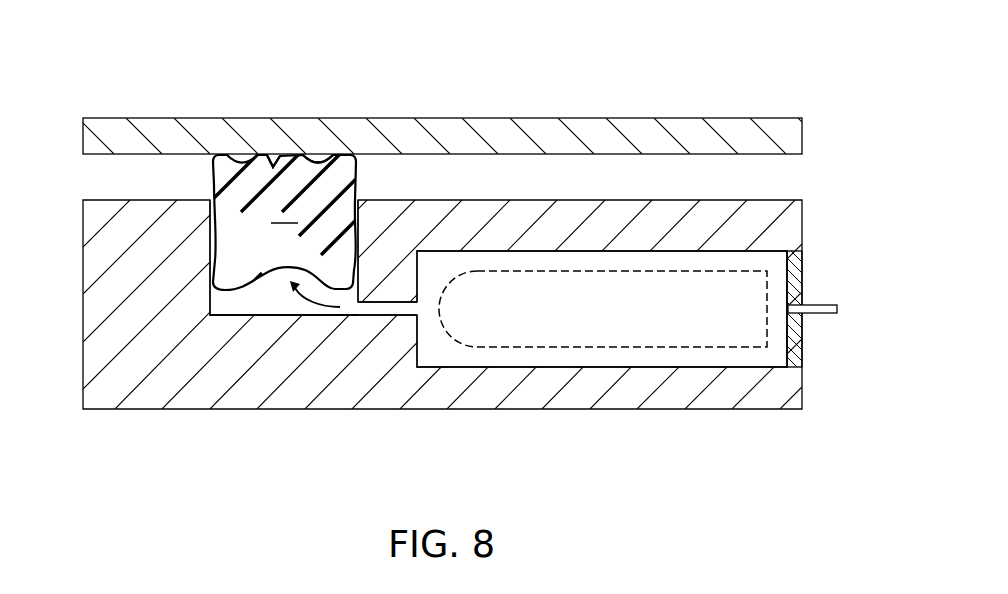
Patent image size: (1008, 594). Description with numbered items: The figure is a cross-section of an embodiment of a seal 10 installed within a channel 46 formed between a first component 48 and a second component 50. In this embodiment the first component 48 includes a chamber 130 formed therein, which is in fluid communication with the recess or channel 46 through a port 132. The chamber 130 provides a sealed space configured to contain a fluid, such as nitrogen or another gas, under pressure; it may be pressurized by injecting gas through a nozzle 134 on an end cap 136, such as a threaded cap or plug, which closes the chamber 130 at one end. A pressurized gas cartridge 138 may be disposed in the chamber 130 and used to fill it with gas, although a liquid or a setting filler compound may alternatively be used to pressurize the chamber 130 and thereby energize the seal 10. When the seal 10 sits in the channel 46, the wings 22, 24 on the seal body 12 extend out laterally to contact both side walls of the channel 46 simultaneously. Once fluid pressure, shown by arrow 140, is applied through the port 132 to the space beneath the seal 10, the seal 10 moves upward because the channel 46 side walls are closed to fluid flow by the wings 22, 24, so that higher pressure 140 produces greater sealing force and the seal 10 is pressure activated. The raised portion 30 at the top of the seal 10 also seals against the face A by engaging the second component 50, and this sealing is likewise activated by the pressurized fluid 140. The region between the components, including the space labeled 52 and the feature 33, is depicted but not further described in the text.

The seal 10 is at (651, 72).
The seal body 12 is at (300, 237).
The wing 22 is at (215, 272).
The wing 24 is at (362, 280).
The raised portion 30 is at (282, 158).
The sealing lip 33 is at (334, 154).
The channel 46 is at (228, 305).
The first component 48 is at (98, 356).
The second component 50 is at (137, 130).
The gap 52 is at (98, 178).
The chamber 130 is at (566, 367).
The port 132 is at (372, 310).
The nozzle 134 is at (820, 303).
The end cap 136 is at (795, 343).
The pressurized gas cartridge 138 is at (618, 347).
The fluid pressure arrow 140 is at (322, 305).
The face A is at (273, 165).